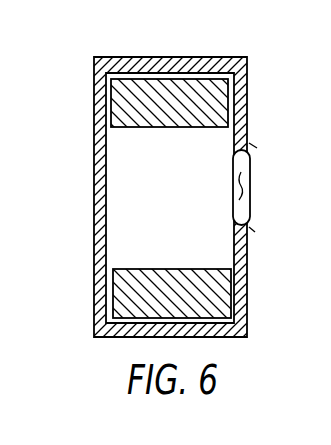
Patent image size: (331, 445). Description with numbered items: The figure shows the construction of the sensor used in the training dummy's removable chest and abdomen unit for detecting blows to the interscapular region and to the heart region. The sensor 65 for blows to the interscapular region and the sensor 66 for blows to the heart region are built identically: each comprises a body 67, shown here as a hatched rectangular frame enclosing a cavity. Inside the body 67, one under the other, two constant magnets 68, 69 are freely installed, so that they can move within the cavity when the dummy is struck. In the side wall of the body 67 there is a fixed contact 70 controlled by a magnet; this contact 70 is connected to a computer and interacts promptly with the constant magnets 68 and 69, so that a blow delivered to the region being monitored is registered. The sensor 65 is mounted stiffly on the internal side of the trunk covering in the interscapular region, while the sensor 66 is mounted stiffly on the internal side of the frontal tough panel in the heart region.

The sensor for blows to the interscapular region 65 is at (93, 175).
The sensor for blows to the heart region 66 is at (172, 197).
The body 67 is at (245, 76).
The constant magnet 68 is at (118, 95).
The constant magnet 69 is at (116, 293).
The contact controlled by a magnet 70 is at (247, 190).